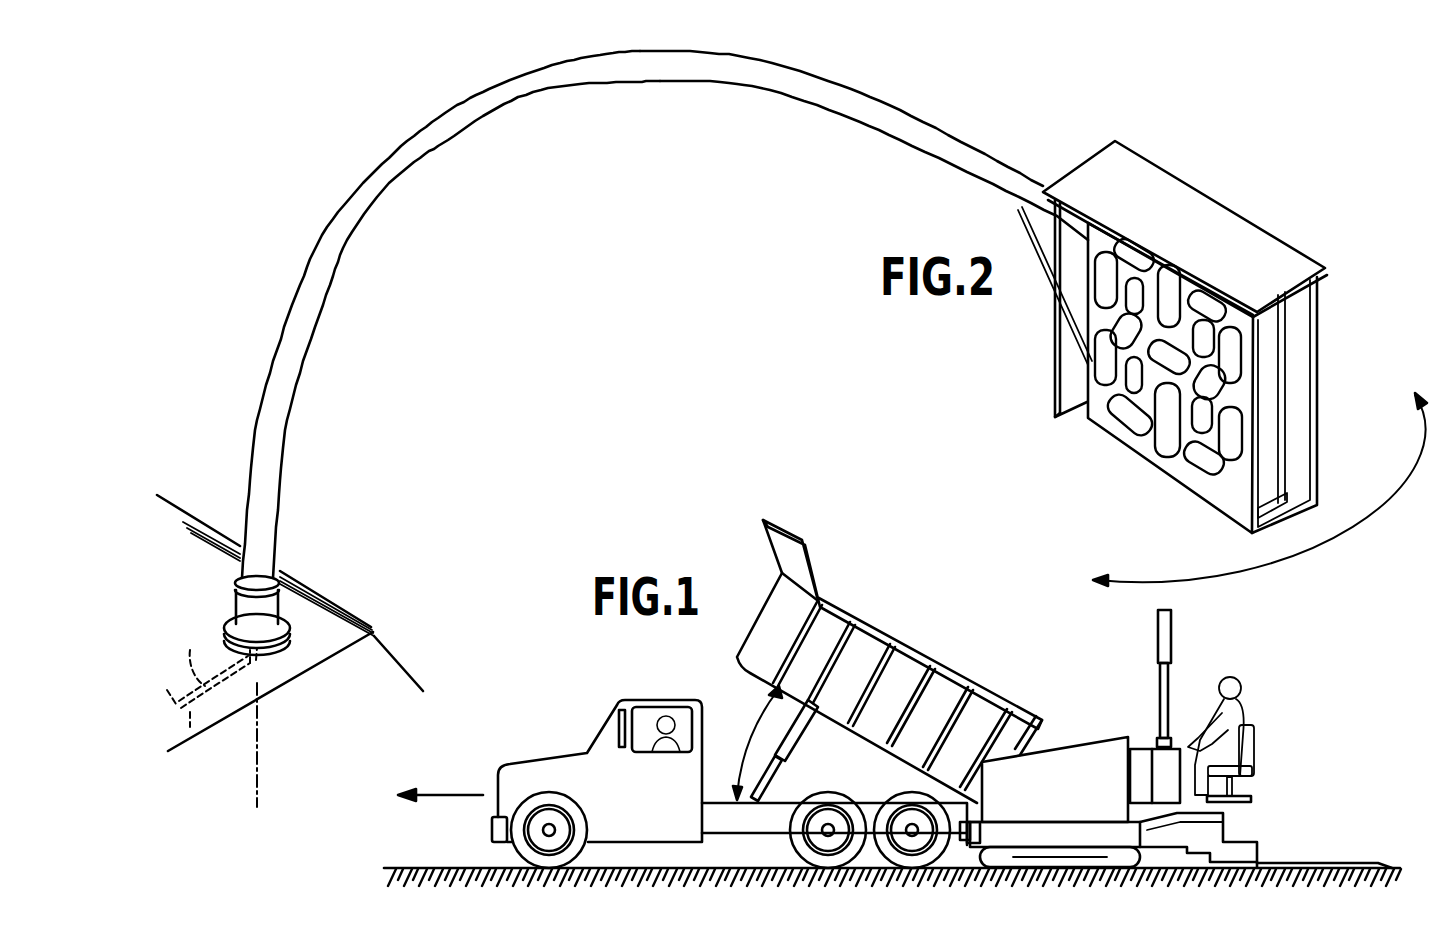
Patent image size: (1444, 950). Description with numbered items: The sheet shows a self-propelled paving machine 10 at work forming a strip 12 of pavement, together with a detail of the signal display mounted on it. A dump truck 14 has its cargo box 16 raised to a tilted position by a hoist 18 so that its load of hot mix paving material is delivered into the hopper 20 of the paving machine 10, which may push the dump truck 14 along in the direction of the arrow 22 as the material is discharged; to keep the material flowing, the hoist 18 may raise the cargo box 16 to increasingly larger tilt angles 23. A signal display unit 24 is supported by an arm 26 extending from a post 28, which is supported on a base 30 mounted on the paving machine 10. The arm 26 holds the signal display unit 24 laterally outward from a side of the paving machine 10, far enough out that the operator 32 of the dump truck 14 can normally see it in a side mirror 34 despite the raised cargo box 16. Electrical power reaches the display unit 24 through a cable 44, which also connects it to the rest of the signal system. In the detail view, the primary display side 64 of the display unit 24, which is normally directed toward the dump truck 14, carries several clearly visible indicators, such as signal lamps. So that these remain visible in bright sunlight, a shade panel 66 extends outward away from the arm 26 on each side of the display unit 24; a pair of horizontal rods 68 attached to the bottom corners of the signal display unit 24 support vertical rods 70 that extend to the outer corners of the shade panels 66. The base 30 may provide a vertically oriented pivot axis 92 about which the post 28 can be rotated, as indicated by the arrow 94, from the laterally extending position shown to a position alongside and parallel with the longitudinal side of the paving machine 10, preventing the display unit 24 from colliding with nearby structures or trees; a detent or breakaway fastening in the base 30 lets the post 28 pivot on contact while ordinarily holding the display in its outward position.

In FIG. 1, the self-propelled paving machine 10 is at (330, 600).
In FIG. 1, the strip of pavement 12 is at (1355, 863).
In FIG. 1, the dump truck 14 is at (525, 765).
In FIG. 1, the cargo box 16 is at (923, 652).
In FIG. 1, the hoist 18 is at (803, 742).
In FIG. 1, the hopper 20 is at (1078, 760).
In FIG. 1, the arrow 22 is at (445, 794).
In FIG. 1, the tilt angle 23 is at (750, 738).
In FIG. 1, the signal display unit 24 is at (1158, 637).
In FIG. 2, the signal display unit 24 is at (1282, 194).
In FIG. 2, the arm 26 is at (977, 148).
In FIG. 1, the post 28 is at (287, 450).
In FIG. 1, the base 30 is at (235, 588).
In FIG. 1, the operator 32 is at (672, 707).
In FIG. 1, the side mirror 34 is at (618, 727).
In FIG. 1, the cable 44 is at (212, 676).
In FIG. 2, the primary display side 64 is at (1215, 482).
In FIG. 2, the shade panel 66 is at (1063, 190).
In FIG. 2, the horizontal rods 68 is at (1068, 420).
In FIG. 2, the vertical rods 70 is at (1053, 362).
In FIG. 1, the pivot axis 92 is at (257, 748).
In FIG. 2, the arrow 94 is at (1347, 545).